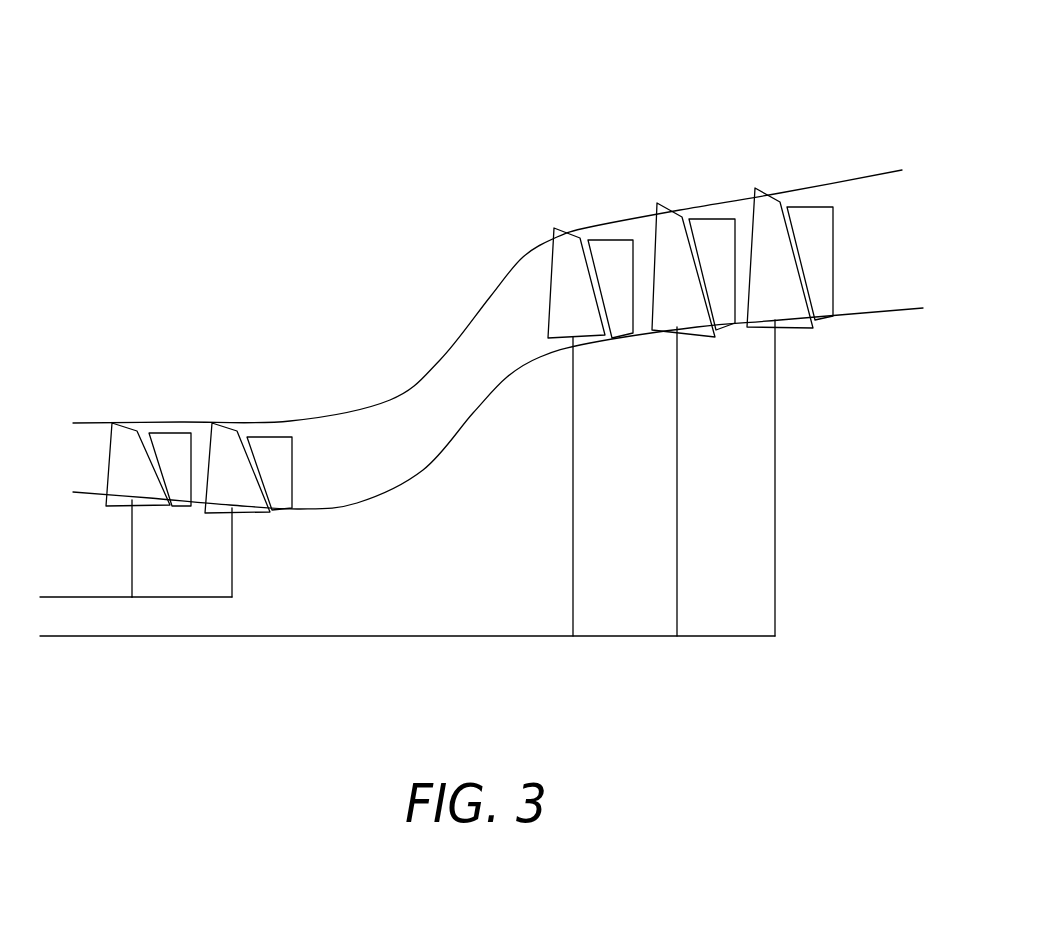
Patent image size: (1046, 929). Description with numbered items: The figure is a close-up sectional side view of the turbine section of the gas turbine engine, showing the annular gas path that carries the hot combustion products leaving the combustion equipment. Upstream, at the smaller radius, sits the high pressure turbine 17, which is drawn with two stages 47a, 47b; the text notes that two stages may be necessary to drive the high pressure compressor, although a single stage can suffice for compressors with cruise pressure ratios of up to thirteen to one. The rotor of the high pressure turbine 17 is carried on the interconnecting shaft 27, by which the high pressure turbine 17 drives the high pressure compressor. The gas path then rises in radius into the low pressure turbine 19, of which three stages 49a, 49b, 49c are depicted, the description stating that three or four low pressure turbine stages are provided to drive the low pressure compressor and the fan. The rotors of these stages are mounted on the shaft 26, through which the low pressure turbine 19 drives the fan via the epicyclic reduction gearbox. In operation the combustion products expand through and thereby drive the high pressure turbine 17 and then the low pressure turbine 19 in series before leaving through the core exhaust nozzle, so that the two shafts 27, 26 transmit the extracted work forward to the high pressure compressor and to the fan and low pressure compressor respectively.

The high pressure turbine 17 is at (185, 255).
The low pressure turbine 19 is at (730, 137).
The high pressure turbine stage 47a is at (147, 423).
The high pressure turbine stage 47b is at (253, 423).
The low pressure turbine stage 49a is at (570, 232).
The low pressure turbine stage 49b is at (675, 202).
The low pressure turbine stage 49c is at (810, 200).
The shaft 26 is at (90, 597).
The interconnecting shaft 27 is at (323, 637).